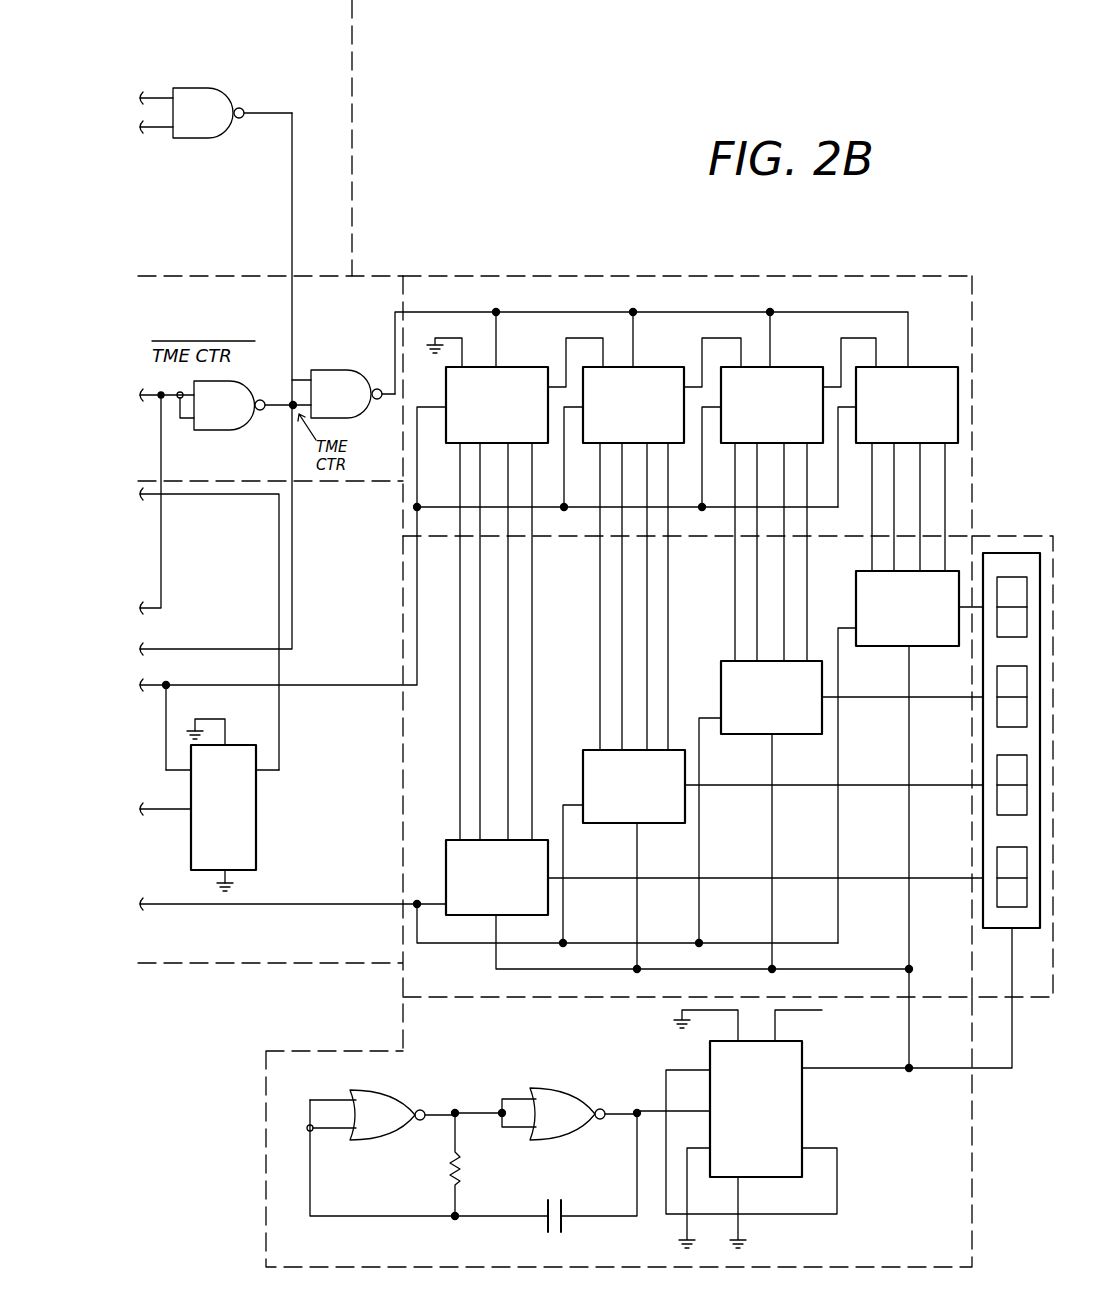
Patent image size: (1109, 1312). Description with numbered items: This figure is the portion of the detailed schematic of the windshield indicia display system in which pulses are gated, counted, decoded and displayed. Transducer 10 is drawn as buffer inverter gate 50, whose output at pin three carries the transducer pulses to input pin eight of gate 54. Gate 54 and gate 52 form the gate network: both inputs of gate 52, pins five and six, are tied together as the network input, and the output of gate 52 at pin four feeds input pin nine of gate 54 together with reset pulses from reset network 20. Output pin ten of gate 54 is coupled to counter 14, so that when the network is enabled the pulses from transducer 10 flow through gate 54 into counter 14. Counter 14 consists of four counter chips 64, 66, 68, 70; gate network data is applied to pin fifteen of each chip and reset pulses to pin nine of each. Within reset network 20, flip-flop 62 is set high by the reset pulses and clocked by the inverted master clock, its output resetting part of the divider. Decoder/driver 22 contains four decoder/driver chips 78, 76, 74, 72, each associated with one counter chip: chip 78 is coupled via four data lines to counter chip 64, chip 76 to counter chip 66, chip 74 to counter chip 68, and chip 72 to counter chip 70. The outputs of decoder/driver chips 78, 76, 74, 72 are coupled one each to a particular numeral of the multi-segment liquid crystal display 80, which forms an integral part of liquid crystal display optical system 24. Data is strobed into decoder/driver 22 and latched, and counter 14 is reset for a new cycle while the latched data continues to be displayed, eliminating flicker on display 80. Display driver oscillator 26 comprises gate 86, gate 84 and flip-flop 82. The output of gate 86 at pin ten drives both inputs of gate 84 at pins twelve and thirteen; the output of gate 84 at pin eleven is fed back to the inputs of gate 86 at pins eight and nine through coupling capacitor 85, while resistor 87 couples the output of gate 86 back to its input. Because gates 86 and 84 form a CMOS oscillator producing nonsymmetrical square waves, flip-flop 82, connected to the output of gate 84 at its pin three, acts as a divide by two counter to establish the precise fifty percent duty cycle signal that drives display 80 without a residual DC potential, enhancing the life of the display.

The transducer 10 is at (312, 49).
The counter 14 is at (946, 307).
The reset network 20 is at (355, 315).
The decoder/driver 22 is at (712, 603).
The liquid crystal display optical system 24 is at (994, 540).
The display driver oscillator 26 is at (927, 1157).
The buffer inverter gate 50 is at (226, 138).
The gate 52 is at (222, 430).
The gate 54 is at (370, 370).
The flip-flop 62 is at (256, 812).
The counter chip 64 is at (510, 589).
The counter chip 66 is at (652, 544).
The counter chip 68 is at (789, 499).
The counter chip 70 is at (898, 469).
The decoder/driver chip 72 is at (910, 819).
The decoder/driver chip 74 is at (841, 815).
The decoder/driver chip 76 is at (773, 859).
The decoder/driver chip 78 is at (561, 904).
The multi-segment liquid crystal display 80 is at (1012, 932).
The flip-flop 82 is at (802, 1094).
The gate 84 is at (554, 1089).
The coupling capacitor 85 is at (562, 1204).
The gate 86 is at (364, 1089).
The resistor 87 is at (444, 1168).